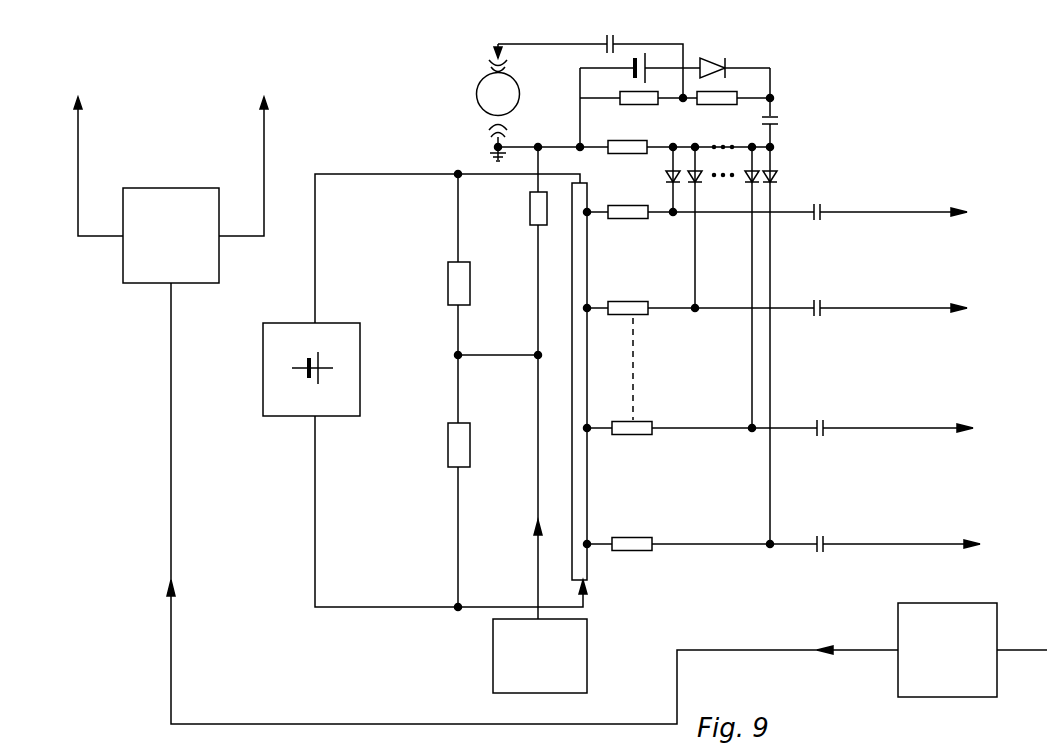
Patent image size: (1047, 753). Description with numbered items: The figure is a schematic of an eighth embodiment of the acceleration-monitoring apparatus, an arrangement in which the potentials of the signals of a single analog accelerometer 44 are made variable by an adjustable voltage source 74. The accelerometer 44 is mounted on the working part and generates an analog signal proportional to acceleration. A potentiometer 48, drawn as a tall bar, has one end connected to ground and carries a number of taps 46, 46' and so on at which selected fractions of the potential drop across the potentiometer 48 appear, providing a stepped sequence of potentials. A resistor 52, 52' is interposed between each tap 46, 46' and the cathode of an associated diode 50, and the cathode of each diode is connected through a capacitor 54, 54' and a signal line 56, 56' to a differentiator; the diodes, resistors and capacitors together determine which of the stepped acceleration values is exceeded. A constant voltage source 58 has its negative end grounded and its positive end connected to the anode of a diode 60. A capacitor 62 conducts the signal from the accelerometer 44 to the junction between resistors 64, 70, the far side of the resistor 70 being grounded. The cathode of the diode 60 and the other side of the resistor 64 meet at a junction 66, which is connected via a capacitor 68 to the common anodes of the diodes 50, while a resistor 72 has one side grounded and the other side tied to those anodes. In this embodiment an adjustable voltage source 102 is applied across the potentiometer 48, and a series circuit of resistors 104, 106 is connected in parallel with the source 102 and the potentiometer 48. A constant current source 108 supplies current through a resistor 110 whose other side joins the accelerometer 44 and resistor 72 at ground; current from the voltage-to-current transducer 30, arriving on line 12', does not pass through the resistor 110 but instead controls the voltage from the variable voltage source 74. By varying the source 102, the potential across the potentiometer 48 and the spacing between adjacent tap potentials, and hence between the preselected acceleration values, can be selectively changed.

The signal line 12' is at (876, 628).
The voltage-to-current transducer 30 is at (955, 617).
The analog accelerometer 44 is at (516, 106).
The tap 46 is at (617, 226).
The tap 46' is at (617, 323).
The potentiometer 48 is at (575, 383).
The diode 50 is at (665, 177).
The resistor 52 is at (702, 194).
The resistor 52' is at (715, 342).
The capacitor 54 is at (889, 189).
The capacitor 54' is at (888, 285).
The signal line 56 is at (805, 236).
The signal line 56' is at (810, 341).
The constant voltage source 58 is at (648, 66).
The diode 60 is at (746, 52).
The capacitor 62 is at (598, 50).
The resistor 64 is at (727, 99).
The junction 66 is at (772, 90).
The capacitor 68 is at (779, 117).
The resistor 70 is at (640, 99).
The resistor 72 is at (628, 147).
The variable voltage source 74 is at (148, 265).
The adjustable voltage source 102 is at (282, 338).
The resistor 104 is at (458, 282).
The resistor 106 is at (460, 440).
The constant current source 108 is at (578, 650).
The resistor 110 is at (532, 210).